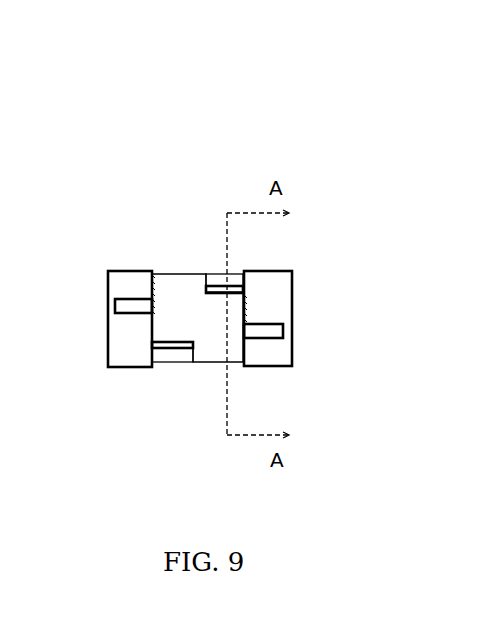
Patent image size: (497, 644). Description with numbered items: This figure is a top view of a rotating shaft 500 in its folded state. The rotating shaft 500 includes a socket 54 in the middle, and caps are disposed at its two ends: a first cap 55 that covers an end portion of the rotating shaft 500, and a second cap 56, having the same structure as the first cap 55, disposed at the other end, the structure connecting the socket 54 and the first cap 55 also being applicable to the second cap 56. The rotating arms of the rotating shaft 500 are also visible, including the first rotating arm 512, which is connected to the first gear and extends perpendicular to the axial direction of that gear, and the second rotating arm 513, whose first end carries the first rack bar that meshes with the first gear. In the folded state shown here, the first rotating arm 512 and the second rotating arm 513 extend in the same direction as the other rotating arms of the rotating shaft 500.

The rotating shaft 500 is at (202, 53).
The second cap 56 is at (128, 268).
The socket 54 is at (183, 278).
The second rotating arm 513 is at (212, 277).
The first cap 55 is at (270, 292).
The first rotating arm 512 is at (265, 333).